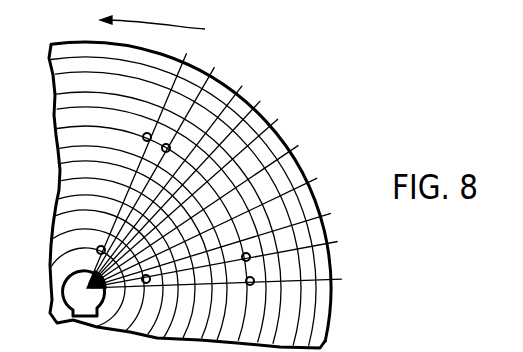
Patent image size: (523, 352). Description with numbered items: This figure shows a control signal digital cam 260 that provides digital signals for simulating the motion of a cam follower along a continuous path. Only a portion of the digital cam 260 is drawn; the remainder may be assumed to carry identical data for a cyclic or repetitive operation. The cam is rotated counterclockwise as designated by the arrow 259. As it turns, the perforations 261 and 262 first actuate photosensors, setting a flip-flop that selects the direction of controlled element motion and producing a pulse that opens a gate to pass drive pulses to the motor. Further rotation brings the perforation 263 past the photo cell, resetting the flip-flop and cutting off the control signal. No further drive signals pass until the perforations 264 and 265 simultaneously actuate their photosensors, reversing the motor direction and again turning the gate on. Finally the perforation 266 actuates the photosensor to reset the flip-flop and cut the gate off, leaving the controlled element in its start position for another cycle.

The arrow 259 is at (170, 28).
The digital cam 260 is at (324, 229).
The perforation 261 is at (99, 246).
The perforation 262 is at (147, 133).
The perforation 263 is at (170, 147).
The perforation 264 is at (149, 282).
The perforation 265 is at (246, 253).
The perforation 266 is at (250, 285).